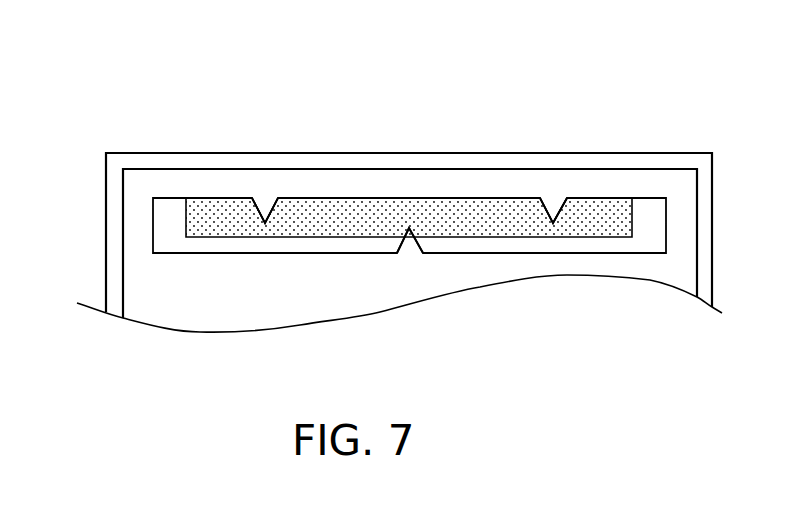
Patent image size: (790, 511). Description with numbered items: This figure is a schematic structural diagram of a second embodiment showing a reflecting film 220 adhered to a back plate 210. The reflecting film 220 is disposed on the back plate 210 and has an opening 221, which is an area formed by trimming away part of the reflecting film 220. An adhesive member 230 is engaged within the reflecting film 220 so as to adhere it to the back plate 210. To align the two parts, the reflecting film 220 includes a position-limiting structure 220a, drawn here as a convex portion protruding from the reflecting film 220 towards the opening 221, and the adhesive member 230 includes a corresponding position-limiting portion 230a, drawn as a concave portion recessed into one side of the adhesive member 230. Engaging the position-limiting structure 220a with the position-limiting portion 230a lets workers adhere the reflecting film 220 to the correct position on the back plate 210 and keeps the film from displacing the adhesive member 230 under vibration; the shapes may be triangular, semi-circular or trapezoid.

The back plate 210 is at (117, 160).
The reflecting film 220 is at (147, 290).
The opening 221 is at (170, 207).
The adhesive member 230 is at (419, 215).
The position-limiting structure 220a is at (265, 210).
The position-limiting portion 230a is at (553, 205).